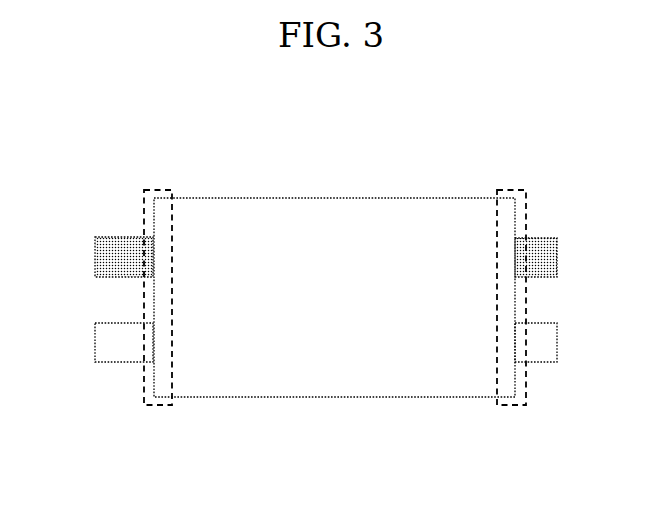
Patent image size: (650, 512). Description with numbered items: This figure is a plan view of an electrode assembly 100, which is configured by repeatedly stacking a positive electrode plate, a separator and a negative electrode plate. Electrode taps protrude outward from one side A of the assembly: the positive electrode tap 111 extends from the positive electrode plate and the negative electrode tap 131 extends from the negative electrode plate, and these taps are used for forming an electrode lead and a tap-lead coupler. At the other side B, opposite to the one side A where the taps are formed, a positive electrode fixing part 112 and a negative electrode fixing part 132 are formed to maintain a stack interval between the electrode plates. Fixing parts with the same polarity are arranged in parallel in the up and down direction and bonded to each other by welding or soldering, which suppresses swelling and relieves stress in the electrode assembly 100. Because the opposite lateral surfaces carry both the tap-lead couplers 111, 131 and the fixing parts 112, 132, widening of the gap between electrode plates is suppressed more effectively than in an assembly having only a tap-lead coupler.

The electrode assembly 100 is at (140, 166).
The negative electrode tap 131 is at (102, 258).
The negative electrode fixing part 132 is at (543, 258).
The positive electrode tap 111 is at (103, 337).
The positive electrode fixing part 112 is at (543, 337).
The one side A is at (150, 408).
The other side B is at (510, 408).